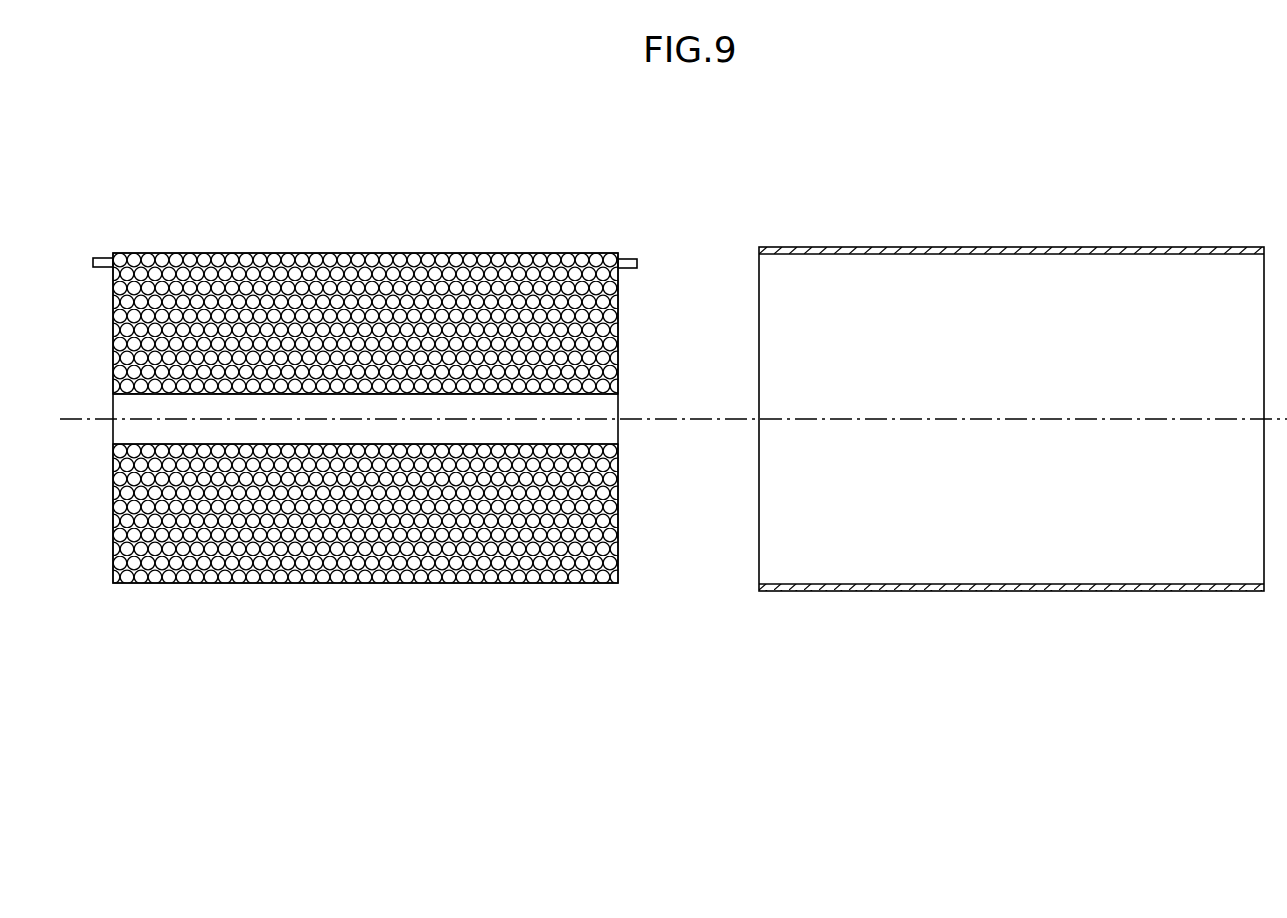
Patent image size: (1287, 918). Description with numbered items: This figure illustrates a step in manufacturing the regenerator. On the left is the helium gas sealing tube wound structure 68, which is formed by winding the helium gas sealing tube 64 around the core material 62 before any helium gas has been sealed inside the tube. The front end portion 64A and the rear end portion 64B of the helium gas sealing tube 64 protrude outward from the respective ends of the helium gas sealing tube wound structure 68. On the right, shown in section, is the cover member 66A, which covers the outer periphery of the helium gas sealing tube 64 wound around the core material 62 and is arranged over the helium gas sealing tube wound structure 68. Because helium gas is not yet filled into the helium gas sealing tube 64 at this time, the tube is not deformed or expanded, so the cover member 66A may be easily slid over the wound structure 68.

The core material 62 is at (603, 405).
The helium gas sealing tube 64 is at (352, 547).
The front end portion 64A is at (624, 258).
The rear end portion 64B is at (107, 257).
The cover member 66A is at (1147, 247).
The helium gas sealing tube wound structure 68 is at (496, 248).